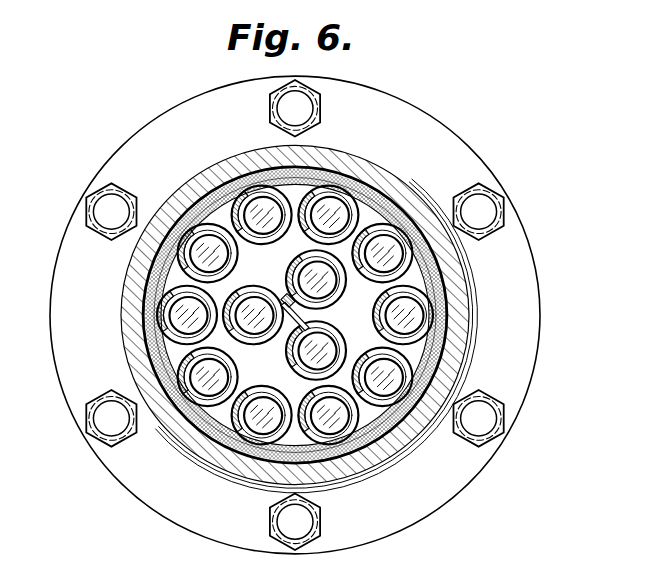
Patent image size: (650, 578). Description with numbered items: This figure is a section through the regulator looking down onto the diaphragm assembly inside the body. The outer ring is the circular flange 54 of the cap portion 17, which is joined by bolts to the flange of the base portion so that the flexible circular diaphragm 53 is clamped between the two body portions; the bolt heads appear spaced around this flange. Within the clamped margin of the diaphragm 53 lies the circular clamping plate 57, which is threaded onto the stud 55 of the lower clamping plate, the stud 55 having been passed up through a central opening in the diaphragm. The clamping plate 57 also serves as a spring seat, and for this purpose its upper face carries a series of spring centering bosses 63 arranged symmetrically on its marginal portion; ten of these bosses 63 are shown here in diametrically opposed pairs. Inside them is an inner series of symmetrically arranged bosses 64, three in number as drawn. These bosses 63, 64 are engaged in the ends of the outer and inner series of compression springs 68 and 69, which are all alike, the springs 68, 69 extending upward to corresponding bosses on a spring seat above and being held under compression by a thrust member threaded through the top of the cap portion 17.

The cap portion 17 is at (350, 319).
The flexible circular diaphragm 53 is at (362, 315).
The circular flange 54 is at (314, 315).
The stud 55 is at (278, 294).
The circular clamping plate 57 is at (362, 315).
The spring centering bosses 63 is at (295, 293).
The inner series of bosses 64 is at (323, 314).
The outer series of compression springs 68 is at (224, 315).
The inner series of compression springs 69 is at (258, 331).